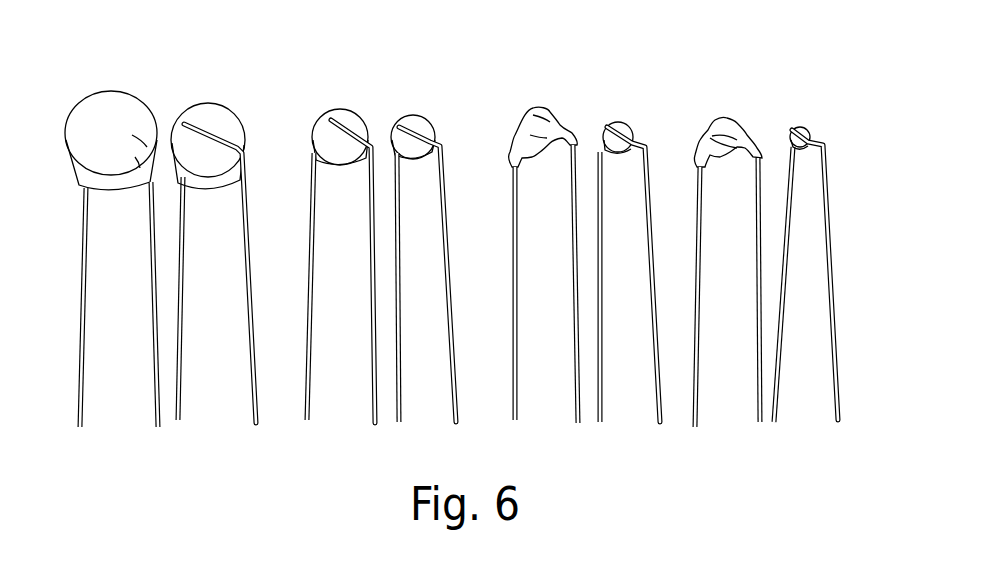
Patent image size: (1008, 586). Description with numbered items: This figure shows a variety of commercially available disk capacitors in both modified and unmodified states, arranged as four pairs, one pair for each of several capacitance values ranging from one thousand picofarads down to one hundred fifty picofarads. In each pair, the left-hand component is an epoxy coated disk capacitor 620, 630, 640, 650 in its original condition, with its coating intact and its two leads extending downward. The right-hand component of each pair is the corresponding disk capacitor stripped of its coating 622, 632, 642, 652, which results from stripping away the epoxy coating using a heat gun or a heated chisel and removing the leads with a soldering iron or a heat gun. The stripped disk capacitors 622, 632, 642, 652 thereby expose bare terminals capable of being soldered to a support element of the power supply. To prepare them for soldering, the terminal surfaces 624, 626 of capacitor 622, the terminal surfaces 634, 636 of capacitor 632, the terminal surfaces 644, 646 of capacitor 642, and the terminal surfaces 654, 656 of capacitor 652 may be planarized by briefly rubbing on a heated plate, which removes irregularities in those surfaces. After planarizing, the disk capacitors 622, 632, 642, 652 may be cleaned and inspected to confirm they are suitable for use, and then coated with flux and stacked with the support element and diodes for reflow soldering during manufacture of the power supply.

The epoxy coated disk capacitor 620 is at (138, 100).
The disk capacitor stripped of its coating 622 is at (208, 100).
The terminal surface 624 is at (225, 147).
The terminal surface 626 is at (207, 177).
The epoxy coated disk capacitor 630 is at (343, 107).
The disk capacitor stripped of its coating 632 is at (418, 113).
The terminal surface 634 is at (417, 142).
The terminal surface 636 is at (405, 157).
The epoxy coated disk capacitor 640 is at (545, 110).
The disk capacitor stripped of its coating 642 is at (627, 125).
The terminal surface 644 is at (632, 138).
The terminal surface 646 is at (618, 155).
The epoxy coated disk capacitor 650 is at (730, 120).
The disk capacitor stripped of its coating 652 is at (798, 127).
The terminal surface 654 is at (807, 137).
The terminal surface 656 is at (803, 150).